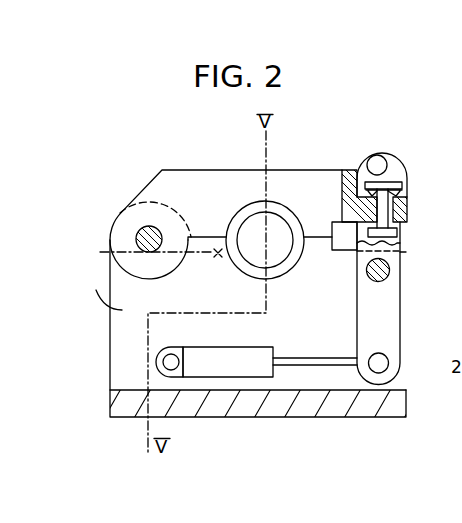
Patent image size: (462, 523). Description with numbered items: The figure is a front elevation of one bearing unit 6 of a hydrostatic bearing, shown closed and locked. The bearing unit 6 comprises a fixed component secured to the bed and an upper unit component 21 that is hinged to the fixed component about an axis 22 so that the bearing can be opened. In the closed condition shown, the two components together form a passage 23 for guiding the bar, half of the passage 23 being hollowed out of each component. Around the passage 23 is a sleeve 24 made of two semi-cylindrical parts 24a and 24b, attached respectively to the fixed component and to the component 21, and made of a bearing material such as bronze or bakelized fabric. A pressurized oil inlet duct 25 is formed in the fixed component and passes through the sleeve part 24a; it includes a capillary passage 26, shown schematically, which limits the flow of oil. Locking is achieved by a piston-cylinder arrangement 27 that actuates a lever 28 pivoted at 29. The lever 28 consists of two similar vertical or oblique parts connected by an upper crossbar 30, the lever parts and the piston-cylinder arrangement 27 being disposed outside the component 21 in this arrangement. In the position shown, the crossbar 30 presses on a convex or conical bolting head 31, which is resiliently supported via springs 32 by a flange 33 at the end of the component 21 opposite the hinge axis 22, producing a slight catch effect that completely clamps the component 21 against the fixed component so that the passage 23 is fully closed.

The bearing unit 6 is at (172, 158).
The unit component 21 is at (202, 180).
The axis 22 is at (150, 225).
The passage 23 is at (288, 233).
The sleeve 24 is at (277, 218).
The sleeve part 24a is at (288, 265).
The sleeve part 24b is at (282, 208).
The pressurized oil inlet duct 25 is at (162, 261).
The capillary passage 26 is at (221, 262).
The piston-cylinder arrangement 27 is at (237, 368).
The lever 28 is at (387, 306).
The pivot 29 is at (389, 272).
The crossbar 30 is at (379, 165).
The bolting head 31 is at (401, 185).
The springs 32 is at (396, 196).
The flange 33 is at (398, 216).